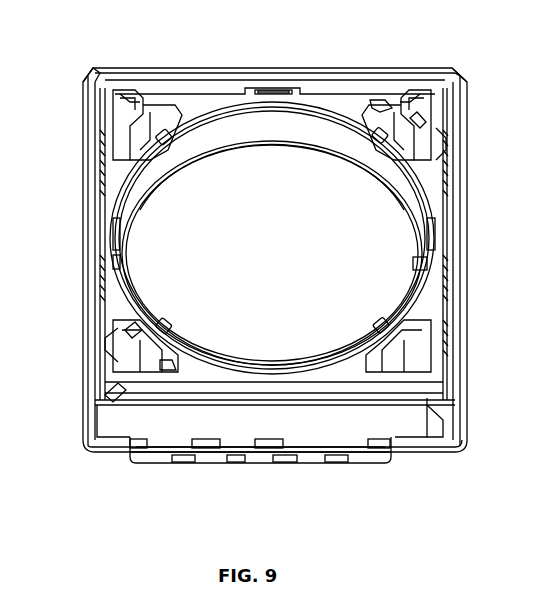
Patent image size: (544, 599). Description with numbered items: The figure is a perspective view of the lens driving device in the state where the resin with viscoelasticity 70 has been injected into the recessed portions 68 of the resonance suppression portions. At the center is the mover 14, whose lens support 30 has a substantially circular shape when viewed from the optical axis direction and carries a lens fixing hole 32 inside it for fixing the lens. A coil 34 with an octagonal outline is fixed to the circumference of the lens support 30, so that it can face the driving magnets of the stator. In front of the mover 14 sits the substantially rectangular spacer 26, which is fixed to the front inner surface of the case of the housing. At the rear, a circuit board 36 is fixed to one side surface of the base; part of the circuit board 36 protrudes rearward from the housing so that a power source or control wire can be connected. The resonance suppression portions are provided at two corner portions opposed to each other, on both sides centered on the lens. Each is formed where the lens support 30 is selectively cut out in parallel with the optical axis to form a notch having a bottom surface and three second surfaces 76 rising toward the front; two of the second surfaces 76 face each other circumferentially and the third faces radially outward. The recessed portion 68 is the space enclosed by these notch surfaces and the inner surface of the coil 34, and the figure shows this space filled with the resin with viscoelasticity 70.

The mover 14 is at (303, 467).
The spacer 26 is at (115, 72).
The lens support 30 is at (407, 315).
The lens fixing hole 32 is at (407, 273).
The coil 34 is at (190, 94).
The circuit board 36 is at (228, 425).
The recessed portion 68 is at (437, 162).
The resin with viscoelasticity 70 is at (398, 117).
The second surfaces 76 is at (384, 106).